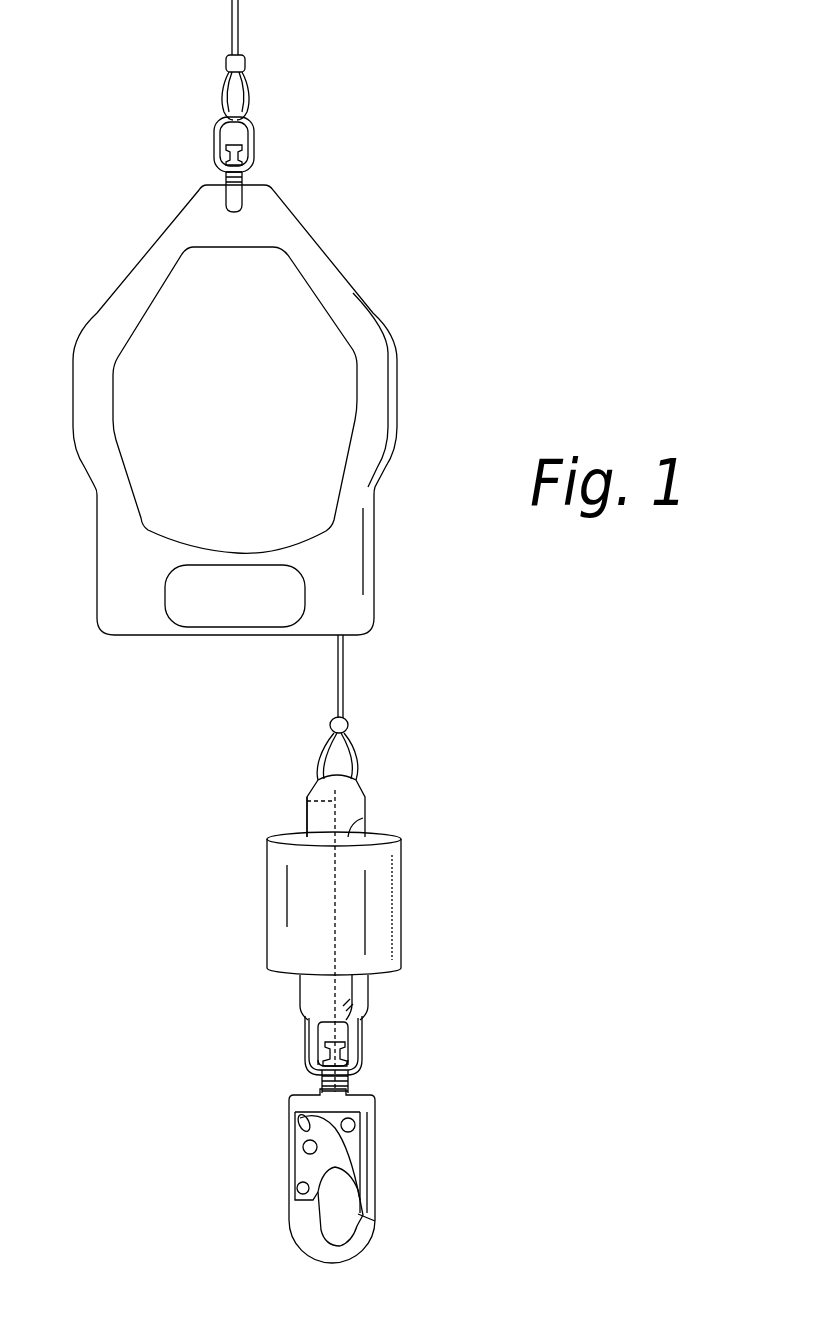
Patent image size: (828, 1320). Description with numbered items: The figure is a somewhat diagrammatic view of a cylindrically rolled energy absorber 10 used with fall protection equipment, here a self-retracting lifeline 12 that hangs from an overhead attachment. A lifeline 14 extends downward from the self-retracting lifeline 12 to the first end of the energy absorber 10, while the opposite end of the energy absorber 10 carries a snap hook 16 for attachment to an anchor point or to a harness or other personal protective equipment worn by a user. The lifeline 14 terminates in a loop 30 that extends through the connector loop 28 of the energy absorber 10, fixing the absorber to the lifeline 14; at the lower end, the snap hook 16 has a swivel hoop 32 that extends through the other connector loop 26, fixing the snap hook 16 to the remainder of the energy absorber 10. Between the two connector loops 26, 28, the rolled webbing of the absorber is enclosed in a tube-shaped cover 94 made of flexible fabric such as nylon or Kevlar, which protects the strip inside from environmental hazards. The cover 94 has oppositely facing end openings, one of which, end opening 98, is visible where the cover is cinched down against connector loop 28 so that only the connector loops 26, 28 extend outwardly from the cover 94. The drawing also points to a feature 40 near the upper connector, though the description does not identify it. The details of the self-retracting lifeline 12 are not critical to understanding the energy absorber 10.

The energy absorber 10 is at (478, 808).
The self-retracting lifeline 12 is at (326, 236).
The lifeline 14 is at (346, 655).
The snap hook 16 is at (377, 1096).
The connector loop 26 is at (300, 989).
The connector loop 28 is at (365, 796).
The loop 30 is at (349, 748).
The swivel hoop 32 is at (363, 1043).
The connector upper portion 40 is at (305, 802).
The tube-shaped cover 94 is at (403, 900).
The end opening 98 is at (358, 811).